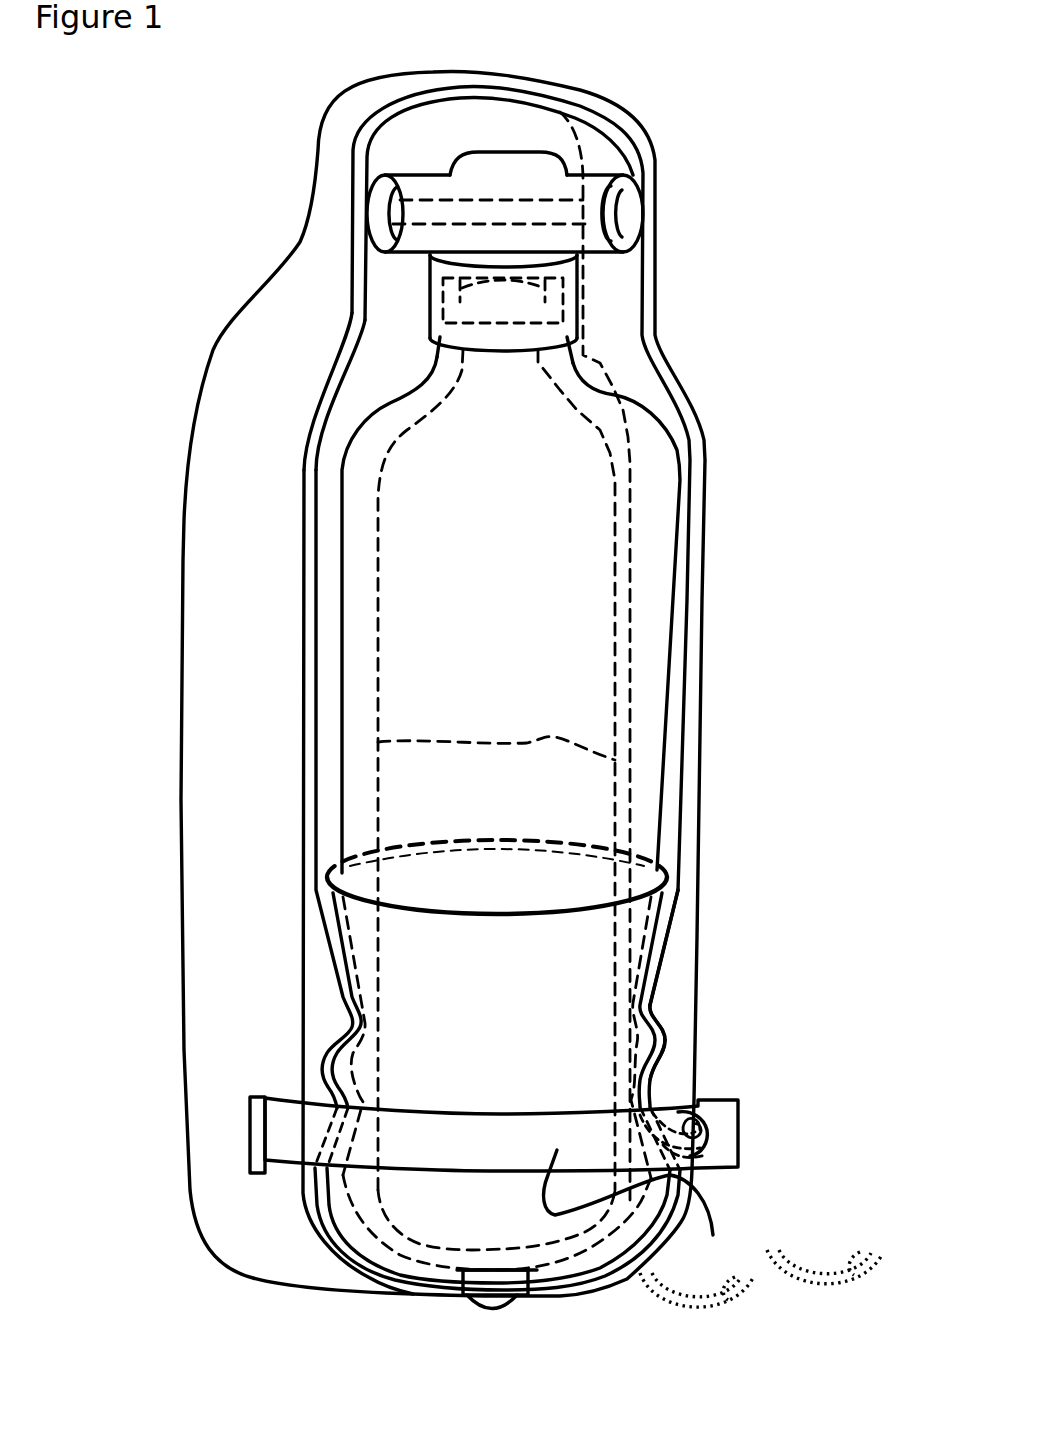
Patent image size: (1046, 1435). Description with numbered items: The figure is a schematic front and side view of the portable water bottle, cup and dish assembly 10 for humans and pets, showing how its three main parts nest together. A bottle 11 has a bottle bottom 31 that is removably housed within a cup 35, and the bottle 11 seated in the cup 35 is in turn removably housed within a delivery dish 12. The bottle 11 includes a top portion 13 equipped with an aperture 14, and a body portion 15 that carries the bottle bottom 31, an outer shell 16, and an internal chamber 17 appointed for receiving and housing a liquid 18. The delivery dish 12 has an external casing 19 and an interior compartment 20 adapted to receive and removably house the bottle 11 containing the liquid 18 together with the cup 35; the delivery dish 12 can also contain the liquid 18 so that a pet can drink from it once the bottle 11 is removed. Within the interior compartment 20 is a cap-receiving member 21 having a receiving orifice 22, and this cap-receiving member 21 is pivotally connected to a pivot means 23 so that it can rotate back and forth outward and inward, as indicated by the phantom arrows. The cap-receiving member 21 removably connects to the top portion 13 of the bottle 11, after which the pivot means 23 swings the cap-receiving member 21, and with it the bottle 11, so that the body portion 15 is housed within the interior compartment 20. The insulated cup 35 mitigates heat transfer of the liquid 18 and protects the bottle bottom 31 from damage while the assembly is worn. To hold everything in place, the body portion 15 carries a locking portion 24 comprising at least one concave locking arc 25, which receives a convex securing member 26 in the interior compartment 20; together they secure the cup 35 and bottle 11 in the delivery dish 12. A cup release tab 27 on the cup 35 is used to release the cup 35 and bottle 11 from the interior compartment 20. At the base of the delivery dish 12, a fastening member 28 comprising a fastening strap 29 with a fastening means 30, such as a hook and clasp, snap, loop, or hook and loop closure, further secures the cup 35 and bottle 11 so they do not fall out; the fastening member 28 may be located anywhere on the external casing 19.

The portable water bottle, cup and dish assembly 10 is at (232, 183).
The bottle 11 is at (510, 662).
The delivery dish 12 is at (722, 439).
The top portion 13 is at (437, 352).
The aperture 14 is at (503, 270).
The body portion 15 is at (338, 815).
The outer shell 16 is at (363, 693).
The internal chamber 17 is at (400, 583).
The liquid 18 is at (600, 757).
The external casing 19 is at (230, 955).
The interior compartment 20 is at (353, 410).
The cap-receiving member 21 is at (515, 165).
The receiving orifice 22 is at (565, 303).
The pivot means 23 is at (645, 203).
The locking portion 24 is at (655, 1072).
The concave locking arc 25 is at (648, 1028).
The convex securing member 26 is at (653, 1000).
The cup release tab 27 is at (517, 1298).
The fastening member 28 is at (250, 1138).
The fastening strap 29 is at (640, 1212).
The fastening means 30 is at (720, 1130).
The bottle bottom 31 is at (373, 1236).
The cup 35 is at (508, 1020).